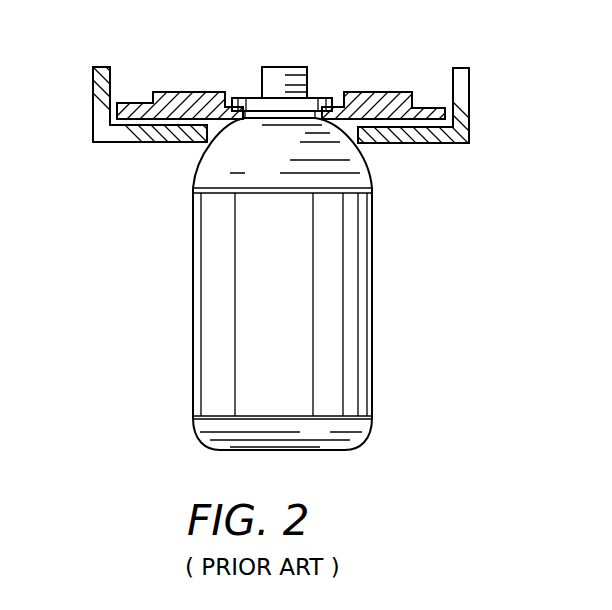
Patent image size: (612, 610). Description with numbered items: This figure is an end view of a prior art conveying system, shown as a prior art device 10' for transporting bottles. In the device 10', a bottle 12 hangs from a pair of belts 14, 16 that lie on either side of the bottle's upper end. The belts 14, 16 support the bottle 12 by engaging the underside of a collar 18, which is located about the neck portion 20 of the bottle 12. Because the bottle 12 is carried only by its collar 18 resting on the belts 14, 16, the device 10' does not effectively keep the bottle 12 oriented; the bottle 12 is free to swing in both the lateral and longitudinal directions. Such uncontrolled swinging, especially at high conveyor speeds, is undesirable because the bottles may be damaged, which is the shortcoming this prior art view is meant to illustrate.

The prior art device 10' is at (322, 95).
The bottle 12 is at (372, 268).
The belt 14 is at (180, 92).
The belt 16 is at (378, 92).
The collar 18 is at (323, 97).
The neck portion 20 is at (334, 97).